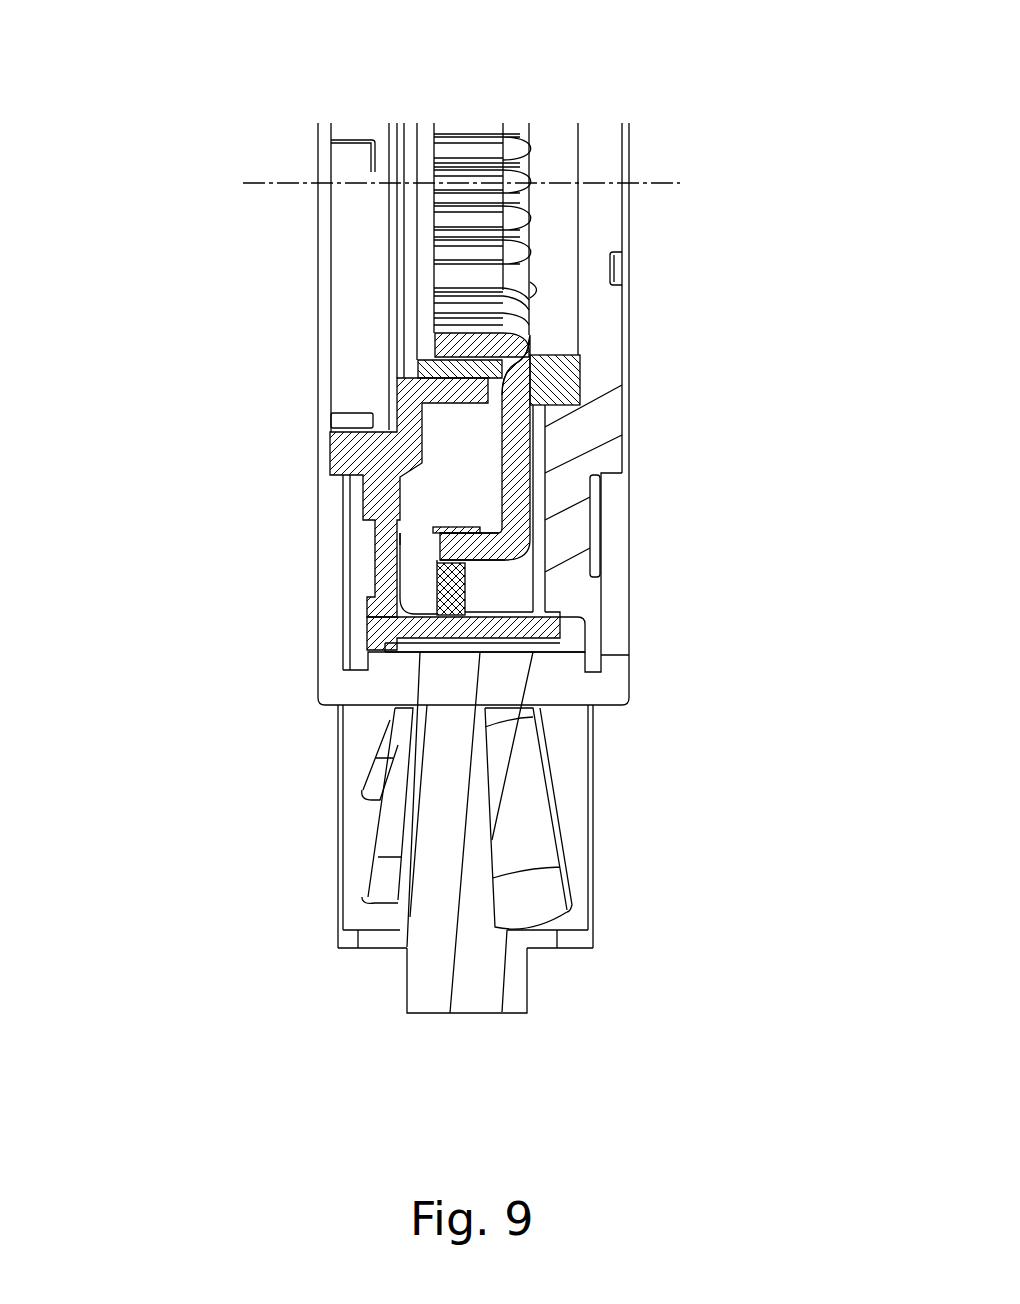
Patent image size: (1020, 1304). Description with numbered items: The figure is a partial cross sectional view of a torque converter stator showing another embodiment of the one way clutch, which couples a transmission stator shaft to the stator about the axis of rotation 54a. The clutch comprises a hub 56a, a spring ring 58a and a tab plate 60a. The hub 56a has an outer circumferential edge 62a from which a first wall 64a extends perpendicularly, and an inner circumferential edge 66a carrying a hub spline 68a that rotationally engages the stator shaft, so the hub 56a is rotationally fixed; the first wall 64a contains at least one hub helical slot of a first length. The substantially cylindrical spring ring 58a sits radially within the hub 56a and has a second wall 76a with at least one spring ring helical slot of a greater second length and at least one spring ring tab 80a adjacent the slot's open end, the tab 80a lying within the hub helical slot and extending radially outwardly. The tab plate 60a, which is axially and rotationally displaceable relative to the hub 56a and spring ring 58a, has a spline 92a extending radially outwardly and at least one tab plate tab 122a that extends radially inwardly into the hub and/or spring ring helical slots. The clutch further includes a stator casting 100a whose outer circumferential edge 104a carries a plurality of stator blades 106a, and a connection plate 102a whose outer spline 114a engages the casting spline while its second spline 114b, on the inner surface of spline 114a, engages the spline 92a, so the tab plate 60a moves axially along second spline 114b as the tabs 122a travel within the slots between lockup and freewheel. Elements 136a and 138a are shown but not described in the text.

The axis of rotation 54a is at (648, 183).
The hub spline 68a is at (468, 142).
The inner circumferential edge 66a is at (530, 322).
The second wall 76a is at (453, 523).
The hub 56a is at (542, 490).
The tab plate tab 122a is at (465, 583).
The collar 136a is at (580, 360).
The housing wall 138a is at (583, 437).
The first wall 64a is at (427, 463).
The spring ring 58a is at (420, 525).
The outer circumferential edge 62a is at (428, 548).
The tab plate 60a is at (465, 603).
The spring ring tab 80a is at (418, 571).
The second spline 114b is at (560, 633).
The spline 92a is at (455, 617).
The stator casting 100a is at (636, 714).
The outer circumferential edge 104a is at (563, 948).
The connection plate 102a is at (370, 662).
The connection plate outer spline 114a is at (385, 745).
The stator blades 106a is at (535, 860).